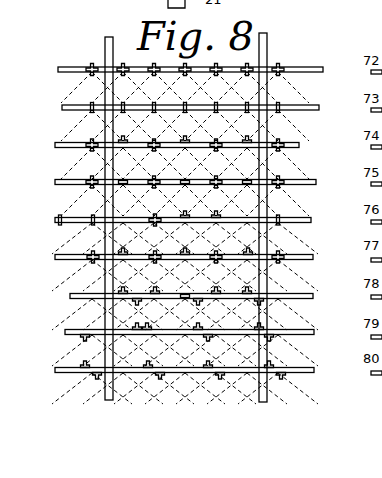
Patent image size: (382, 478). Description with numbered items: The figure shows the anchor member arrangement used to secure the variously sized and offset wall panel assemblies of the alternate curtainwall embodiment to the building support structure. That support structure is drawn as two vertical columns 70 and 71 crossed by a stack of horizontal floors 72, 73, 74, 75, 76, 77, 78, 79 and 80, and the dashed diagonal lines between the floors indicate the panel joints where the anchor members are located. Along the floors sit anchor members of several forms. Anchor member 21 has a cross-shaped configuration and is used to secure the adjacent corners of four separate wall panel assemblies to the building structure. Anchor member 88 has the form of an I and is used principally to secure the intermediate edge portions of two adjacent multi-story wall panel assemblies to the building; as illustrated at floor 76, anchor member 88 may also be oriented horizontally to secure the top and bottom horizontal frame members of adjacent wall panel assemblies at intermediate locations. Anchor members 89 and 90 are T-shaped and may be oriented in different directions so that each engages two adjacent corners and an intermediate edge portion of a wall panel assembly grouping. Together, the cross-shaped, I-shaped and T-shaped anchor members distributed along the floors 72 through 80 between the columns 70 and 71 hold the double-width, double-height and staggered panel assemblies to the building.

The column 70 is at (106, 48).
The column 71 is at (267, 50).
The floor 72 is at (60, 69).
The floor 73 is at (64, 107).
The floor 74 is at (57, 145).
The floor 75 is at (57, 182).
The floor 76 is at (57, 220).
The floor 77 is at (57, 257).
The floor 78 is at (72, 296).
The floor 79 is at (67, 332).
The floor 80 is at (57, 370).
The anchor member 21 is at (92, 66).
The anchor member 88 is at (154, 140).
The anchor member 89 is at (160, 246).
The anchor member 90 is at (247, 140).